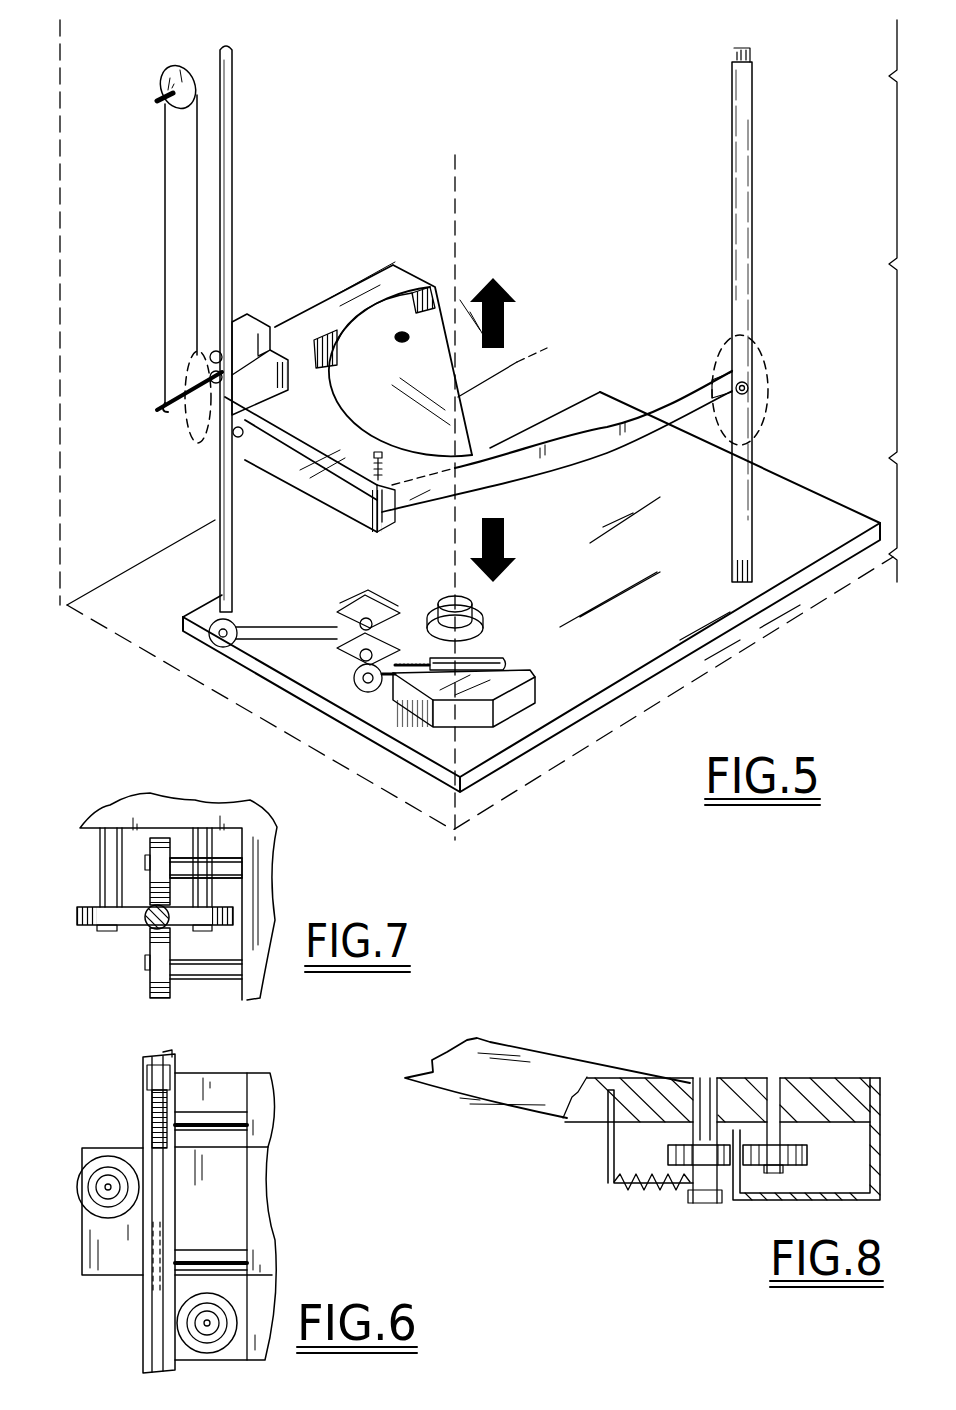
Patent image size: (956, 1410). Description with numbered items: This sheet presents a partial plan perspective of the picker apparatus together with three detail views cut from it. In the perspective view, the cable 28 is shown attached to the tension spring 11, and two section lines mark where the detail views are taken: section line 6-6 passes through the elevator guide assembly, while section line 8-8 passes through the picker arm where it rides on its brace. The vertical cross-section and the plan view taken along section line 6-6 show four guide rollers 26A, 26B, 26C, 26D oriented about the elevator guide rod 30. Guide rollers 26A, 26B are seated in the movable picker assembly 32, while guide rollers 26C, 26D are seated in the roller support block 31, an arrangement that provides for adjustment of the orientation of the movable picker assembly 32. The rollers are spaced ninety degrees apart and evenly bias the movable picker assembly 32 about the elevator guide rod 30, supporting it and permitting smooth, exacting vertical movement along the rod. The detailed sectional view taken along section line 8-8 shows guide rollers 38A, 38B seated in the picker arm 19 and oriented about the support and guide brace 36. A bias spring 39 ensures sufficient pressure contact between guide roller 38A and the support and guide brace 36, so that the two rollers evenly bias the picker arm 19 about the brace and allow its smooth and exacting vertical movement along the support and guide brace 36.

In FIG. 5, the tension spring 11 is at (383, 470).
In FIG. 8, the picker arm 19 is at (570, 1082).
In FIG. 7, the guide roller 26A is at (220, 905).
In FIG. 6, the guide roller 26A is at (180, 1337).
In FIG. 7, the guide roller 26B is at (170, 847).
In FIG. 6, the guide roller 26B is at (146, 1278).
In FIG. 7, the guide roller 26C is at (128, 931).
In FIG. 6, the guide roller 26C is at (96, 1213).
In FIG. 7, the guide roller 26D is at (171, 985).
In FIG. 6, the guide roller 26D is at (142, 1128).
In FIG. 5, the cable 28 is at (220, 500).
In FIG. 7, the elevator guide rod 30 is at (148, 930).
In FIG. 7, the roller support block 31 is at (174, 810).
In FIG. 6, the roller support block 31 is at (262, 1108).
In FIG. 6, the movable picker assembly 32 is at (262, 1190).
In FIG. 8, the support and guide brace 36 is at (838, 1200).
In FIG. 8, the guide roller 38A is at (684, 1148).
In FIG. 8, the guide roller 38B is at (800, 1147).
In FIG. 8, the bias spring 39 is at (682, 1190).
In FIG. 5, the section line 6-6 is at (186, 432).
In FIG. 5, the section line 8-8 is at (768, 404).